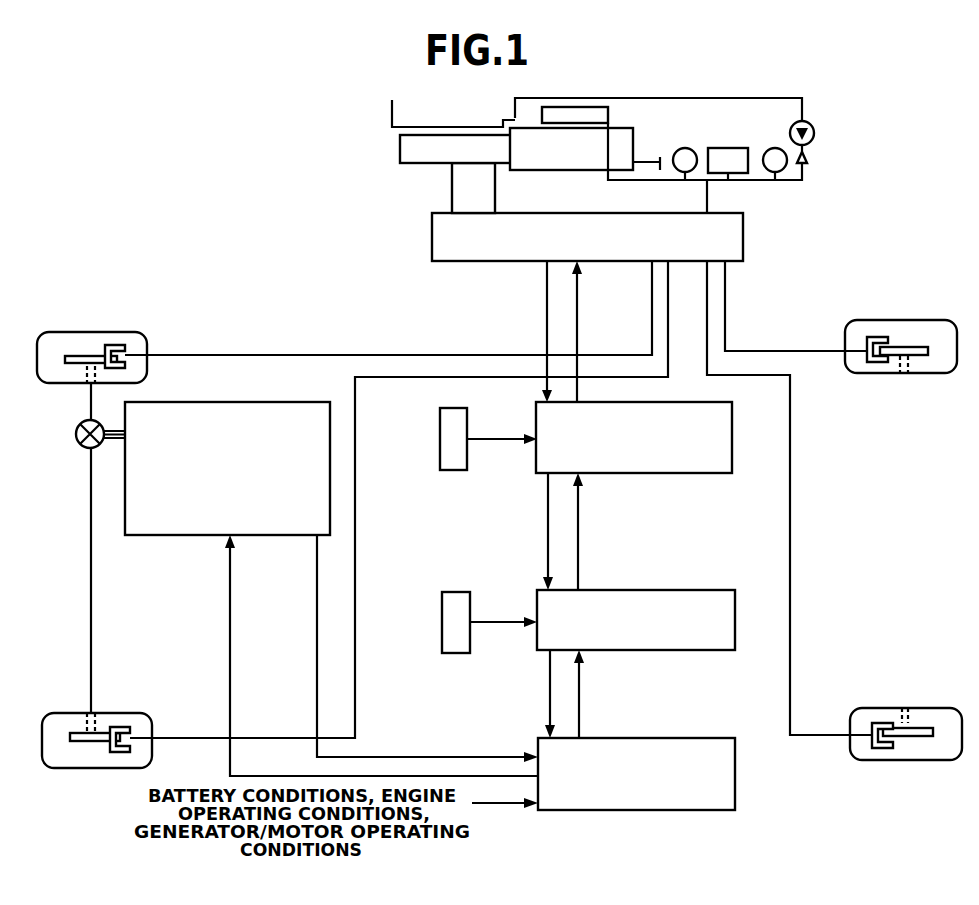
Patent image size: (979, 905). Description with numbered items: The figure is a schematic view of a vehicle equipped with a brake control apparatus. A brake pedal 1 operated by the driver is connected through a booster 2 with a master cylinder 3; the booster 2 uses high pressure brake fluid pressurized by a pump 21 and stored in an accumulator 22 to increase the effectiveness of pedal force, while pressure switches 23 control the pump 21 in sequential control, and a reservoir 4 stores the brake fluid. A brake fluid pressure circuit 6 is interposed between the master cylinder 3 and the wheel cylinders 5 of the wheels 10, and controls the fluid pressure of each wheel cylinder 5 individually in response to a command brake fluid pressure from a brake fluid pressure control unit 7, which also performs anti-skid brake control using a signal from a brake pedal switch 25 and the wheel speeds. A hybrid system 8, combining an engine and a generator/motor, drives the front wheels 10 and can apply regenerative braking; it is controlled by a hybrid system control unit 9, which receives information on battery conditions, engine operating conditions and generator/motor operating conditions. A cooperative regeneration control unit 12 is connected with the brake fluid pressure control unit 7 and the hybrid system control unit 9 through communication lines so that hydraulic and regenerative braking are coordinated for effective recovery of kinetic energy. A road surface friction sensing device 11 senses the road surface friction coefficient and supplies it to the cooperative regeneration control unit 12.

The brake pedal 1 is at (657, 162).
The booster 2 is at (568, 170).
The master cylinder 3 is at (400, 149).
The reservoir 4 is at (392, 114).
The wheel cylinders 5 is at (117, 344).
The brake fluid pressure circuit 6 is at (722, 213).
The brake fluid pressure control unit 7 is at (732, 433).
The hybrid system 8 is at (270, 402).
The hybrid system control unit 9 is at (735, 770).
The wheels 10 is at (63, 387).
The road surface friction sensing device 11 is at (440, 621).
The cooperative regeneration control unit 12 is at (735, 592).
The pump 21 is at (815, 133).
The accumulator 22 is at (728, 148).
The pressure switches 23 is at (683, 148).
The brake pedal switch 25 is at (438, 438).